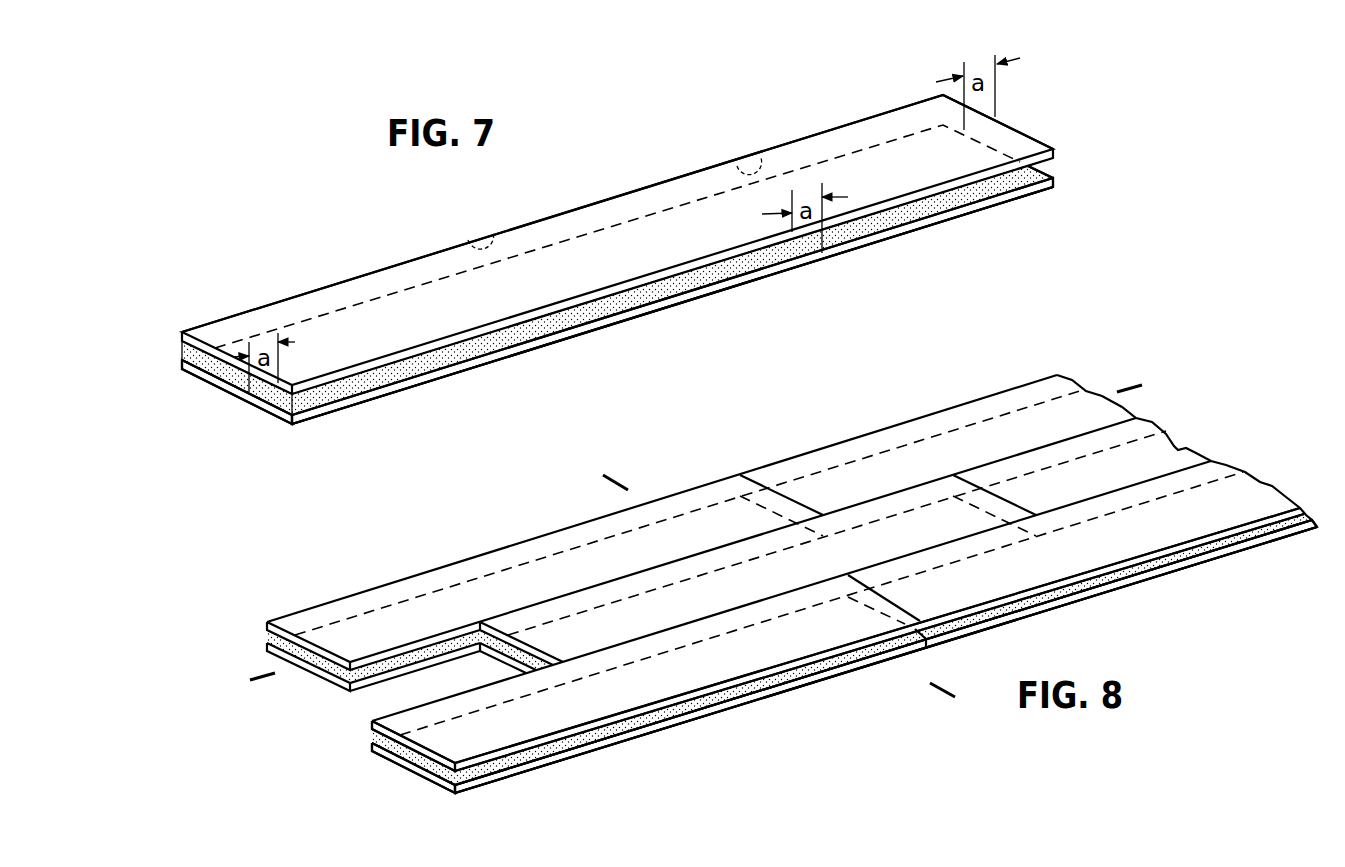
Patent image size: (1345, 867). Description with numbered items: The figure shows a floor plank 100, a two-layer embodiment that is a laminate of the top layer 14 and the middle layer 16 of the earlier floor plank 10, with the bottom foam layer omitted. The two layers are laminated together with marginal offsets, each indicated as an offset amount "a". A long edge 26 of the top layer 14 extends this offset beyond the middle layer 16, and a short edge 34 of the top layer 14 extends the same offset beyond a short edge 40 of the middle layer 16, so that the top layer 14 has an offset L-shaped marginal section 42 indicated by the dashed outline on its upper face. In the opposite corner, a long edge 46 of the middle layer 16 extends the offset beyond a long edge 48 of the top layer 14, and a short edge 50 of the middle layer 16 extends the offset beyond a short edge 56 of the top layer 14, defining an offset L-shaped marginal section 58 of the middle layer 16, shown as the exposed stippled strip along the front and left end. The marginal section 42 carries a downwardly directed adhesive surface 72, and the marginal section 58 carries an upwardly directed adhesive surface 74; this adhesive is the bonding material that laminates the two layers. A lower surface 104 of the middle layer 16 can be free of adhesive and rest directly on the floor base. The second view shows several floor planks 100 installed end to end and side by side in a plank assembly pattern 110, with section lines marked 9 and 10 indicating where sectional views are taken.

In FIG. 8, the section line 9- 9 is at (612, 488).
In FIG. 8, the floor plank 10 is at (266, 676).
In FIG. 7, the top layer 14 is at (643, 239).
In FIG. 8, the top layer 14 is at (421, 750).
In FIG. 7, the middle layer 16 is at (638, 283).
In FIG. 8, the middle layer 16 is at (423, 778).
In FIG. 7, the long edge 26 is at (251, 308).
In FIG. 7, the short edge 34 is at (1018, 133).
In FIG. 7, the short edge 40 is at (1046, 174).
In FIG. 7, the L-shaped marginal section 42 is at (748, 160).
In FIG. 7, the long edge 46 is at (604, 326).
In FIG. 7, the long edge 48 is at (683, 269).
In FIG. 7, the short edge 50 is at (207, 375).
In FIG. 7, the short edge 56 is at (259, 379).
In FIG. 7, the L-shaped marginal section 58 is at (434, 364).
In FIG. 8, the L-shaped marginal section 58 is at (667, 715).
In FIG. 7, the adhesive surface 72 is at (468, 241).
In FIG. 7, the adhesive surface 74 is at (511, 338).
In FIG. 8, the adhesive surface 74 is at (750, 694).
In FIG. 7, the floor plank 100 is at (638, 255).
In FIG. 8, the floor plank 100 is at (795, 579).
In FIG. 7, the lower surface 104 is at (784, 273).
In FIG. 8, the lower surface 104 is at (791, 694).
In FIG. 8, the plank assembly pattern 110 is at (795, 540).